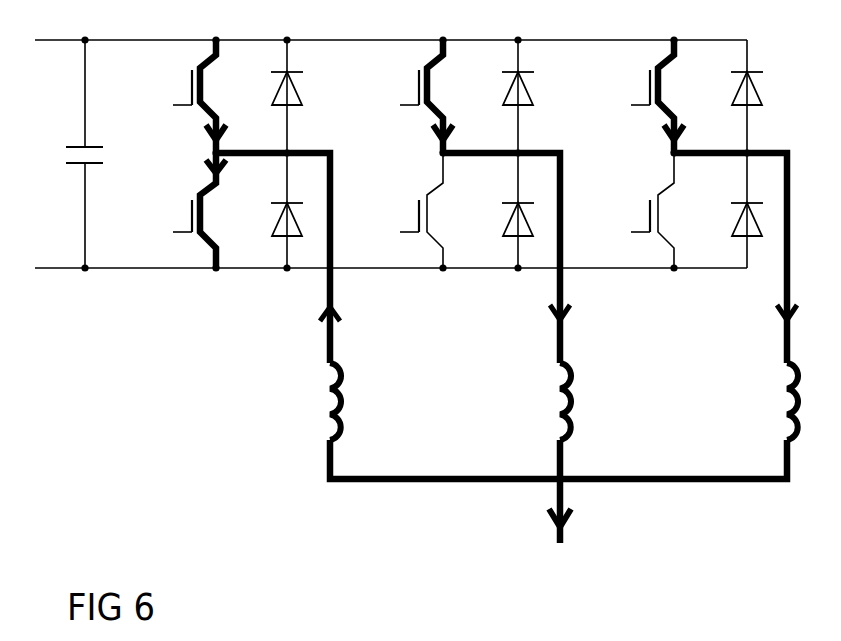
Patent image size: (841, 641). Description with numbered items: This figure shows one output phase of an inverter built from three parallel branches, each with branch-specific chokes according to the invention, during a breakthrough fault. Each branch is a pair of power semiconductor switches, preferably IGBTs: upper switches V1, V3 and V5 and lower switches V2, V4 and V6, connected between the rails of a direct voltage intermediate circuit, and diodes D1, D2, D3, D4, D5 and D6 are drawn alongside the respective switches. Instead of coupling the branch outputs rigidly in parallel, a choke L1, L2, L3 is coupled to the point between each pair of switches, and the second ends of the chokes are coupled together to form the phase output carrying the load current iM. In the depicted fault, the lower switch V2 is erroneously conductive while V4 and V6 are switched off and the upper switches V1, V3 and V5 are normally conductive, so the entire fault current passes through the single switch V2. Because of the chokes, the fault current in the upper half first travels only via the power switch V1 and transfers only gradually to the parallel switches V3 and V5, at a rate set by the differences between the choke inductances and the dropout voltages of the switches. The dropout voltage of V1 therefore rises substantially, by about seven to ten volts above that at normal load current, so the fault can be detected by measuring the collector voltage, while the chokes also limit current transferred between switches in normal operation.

The upper power semiconductor switch V1 is at (184, 96).
The lower power semiconductor switch V2 is at (184, 210).
The upper power semiconductor switch V3 is at (412, 96).
The lower power semiconductor switch V4 is at (407, 210).
The upper power semiconductor switch V5 is at (643, 96).
The lower power semiconductor switch V6 is at (638, 210).
The freewheeling diode D1 is at (268, 86).
The freewheeling diode D2 is at (268, 217).
The freewheeling diode D3 is at (498, 86).
The freewheeling diode D4 is at (498, 217).
The freewheeling diode D5 is at (727, 86).
The freewheeling diode D6 is at (727, 217).
The phase inductance L1 is at (315, 373).
The phase inductance L2 is at (545, 372).
The phase inductance L3 is at (774, 372).
The load current iM is at (541, 526).